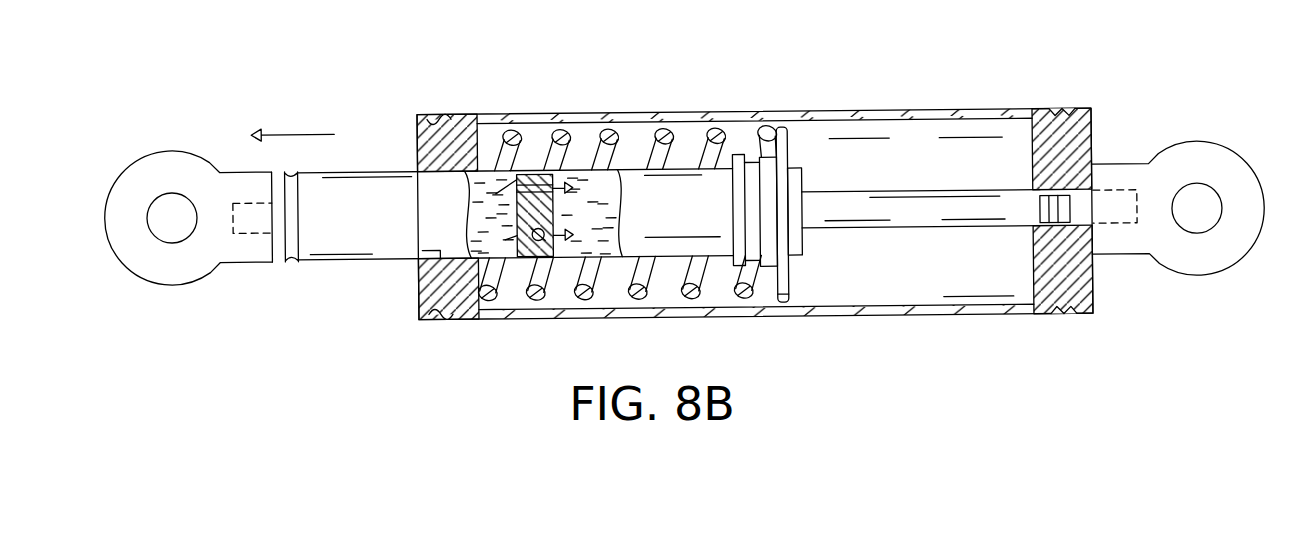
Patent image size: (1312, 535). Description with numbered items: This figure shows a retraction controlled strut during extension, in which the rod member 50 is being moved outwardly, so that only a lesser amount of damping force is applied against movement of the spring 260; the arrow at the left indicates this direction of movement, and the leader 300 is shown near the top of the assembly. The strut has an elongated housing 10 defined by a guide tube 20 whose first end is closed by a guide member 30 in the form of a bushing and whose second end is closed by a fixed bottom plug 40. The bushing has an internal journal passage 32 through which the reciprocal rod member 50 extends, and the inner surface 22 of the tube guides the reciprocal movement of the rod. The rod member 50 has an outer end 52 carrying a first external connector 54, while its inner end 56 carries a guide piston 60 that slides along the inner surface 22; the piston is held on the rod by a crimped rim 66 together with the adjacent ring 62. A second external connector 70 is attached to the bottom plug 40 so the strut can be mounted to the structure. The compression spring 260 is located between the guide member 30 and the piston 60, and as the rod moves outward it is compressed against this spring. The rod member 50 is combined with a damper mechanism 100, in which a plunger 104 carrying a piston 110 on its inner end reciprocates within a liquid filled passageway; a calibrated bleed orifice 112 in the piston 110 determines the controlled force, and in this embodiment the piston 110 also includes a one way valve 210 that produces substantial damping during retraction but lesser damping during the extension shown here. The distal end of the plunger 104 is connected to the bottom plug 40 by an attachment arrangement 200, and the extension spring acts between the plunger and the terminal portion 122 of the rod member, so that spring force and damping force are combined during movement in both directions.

The housing 10 is at (830, 112).
The guide tube 20 is at (602, 318).
The inner surface 22 is at (951, 126).
The guide member 30 is at (417, 130).
The journal passage 32 is at (425, 248).
The bottom plug 40 is at (1097, 122).
The rod member 50 is at (327, 262).
The outer end 52 is at (277, 265).
The first external connector 54 is at (123, 265).
The inner end 56 is at (802, 123).
The guide piston 60 is at (782, 302).
The first retaining ring 62 is at (737, 264).
The crimped rim 66 is at (753, 266).
The second external connector 70 is at (1223, 145).
The damper mechanism 100 is at (855, 232).
The plunger 104 is at (927, 225).
The piston 110 is at (517, 218).
The calibrated bleed orifice 112 is at (532, 176).
The terminal portion 122 is at (800, 177).
The attachment arrangement 200 is at (1065, 189).
The one way valve 210 is at (545, 256).
The compression spring 260 is at (665, 140).
The direction of force 300 is at (757, 84).